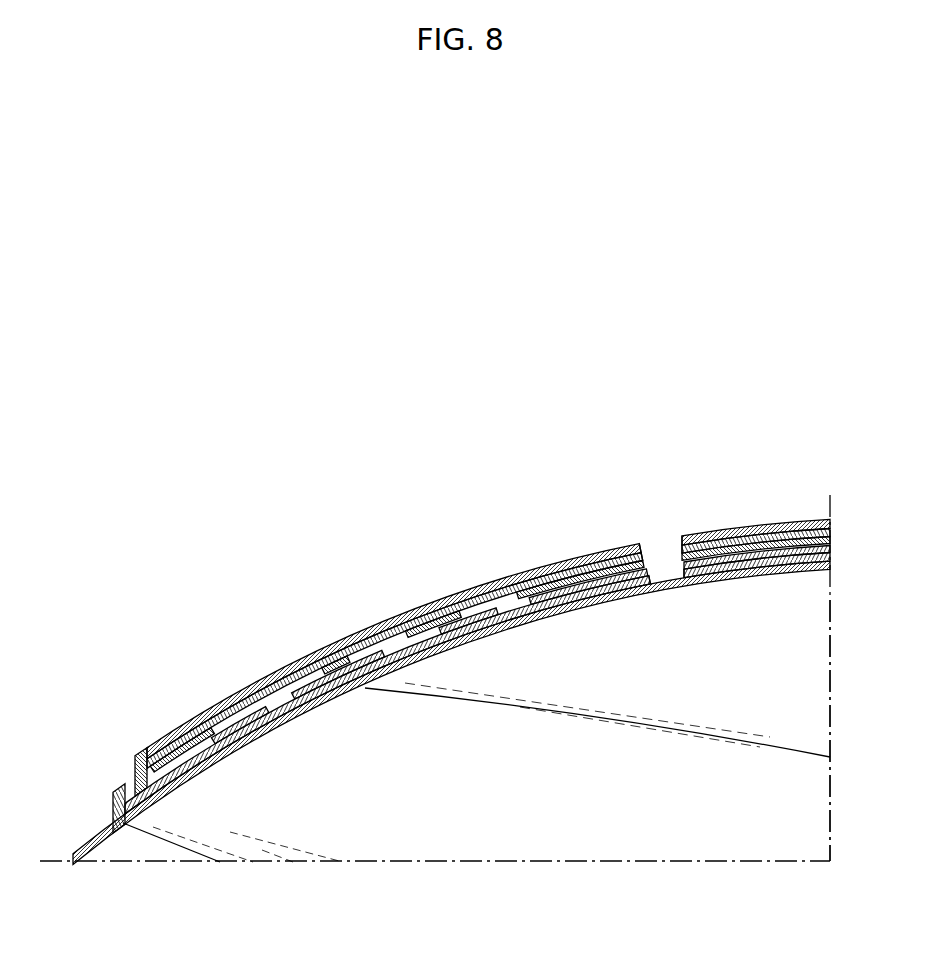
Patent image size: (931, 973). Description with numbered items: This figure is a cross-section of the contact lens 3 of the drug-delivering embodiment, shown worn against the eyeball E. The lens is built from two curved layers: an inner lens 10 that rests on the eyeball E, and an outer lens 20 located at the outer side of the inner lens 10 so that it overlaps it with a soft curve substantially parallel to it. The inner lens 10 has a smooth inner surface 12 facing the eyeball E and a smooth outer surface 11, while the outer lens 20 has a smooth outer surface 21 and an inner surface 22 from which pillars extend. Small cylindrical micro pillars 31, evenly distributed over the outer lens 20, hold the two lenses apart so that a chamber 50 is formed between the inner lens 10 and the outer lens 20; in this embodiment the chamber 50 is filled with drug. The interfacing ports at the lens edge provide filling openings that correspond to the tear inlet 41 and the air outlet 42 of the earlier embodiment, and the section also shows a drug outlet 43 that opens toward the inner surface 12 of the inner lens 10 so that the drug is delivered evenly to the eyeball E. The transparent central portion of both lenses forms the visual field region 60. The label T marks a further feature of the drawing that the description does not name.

The contact lens 3 is at (420, 500).
The inner lens 10 is at (217, 767).
The outer surface 11 is at (175, 790).
The inner surface 12 is at (260, 743).
The outer lens 20 is at (333, 645).
The outer surface 21 is at (250, 688).
The inner surface 22 is at (282, 678).
The micro pillar 31 is at (217, 707).
The tear inlet 41 is at (135, 778).
The air outlet 42 is at (672, 548).
The drug outlet 43 is at (673, 575).
The chamber 50 is at (395, 628).
The visual field region 60 is at (768, 513).
The end block T is at (157, 742).
The eyeball E is at (792, 657).